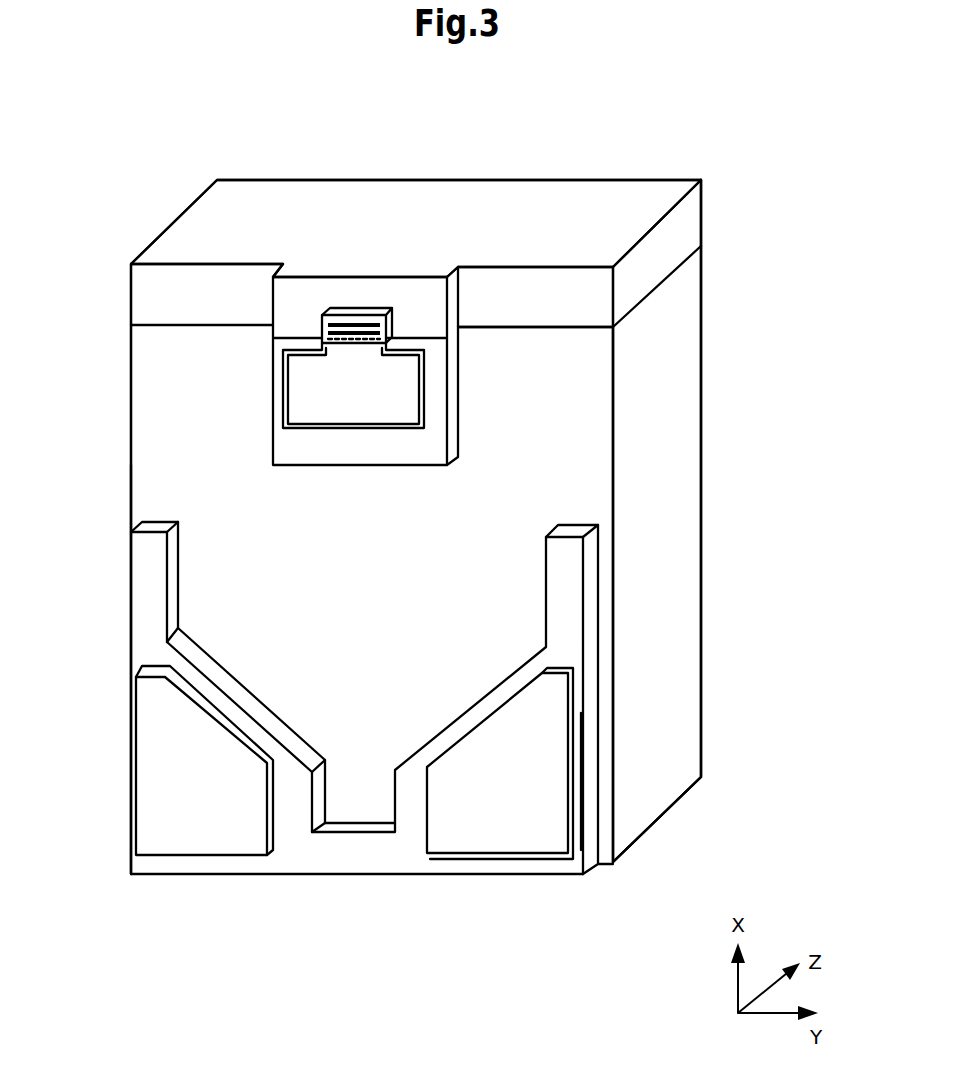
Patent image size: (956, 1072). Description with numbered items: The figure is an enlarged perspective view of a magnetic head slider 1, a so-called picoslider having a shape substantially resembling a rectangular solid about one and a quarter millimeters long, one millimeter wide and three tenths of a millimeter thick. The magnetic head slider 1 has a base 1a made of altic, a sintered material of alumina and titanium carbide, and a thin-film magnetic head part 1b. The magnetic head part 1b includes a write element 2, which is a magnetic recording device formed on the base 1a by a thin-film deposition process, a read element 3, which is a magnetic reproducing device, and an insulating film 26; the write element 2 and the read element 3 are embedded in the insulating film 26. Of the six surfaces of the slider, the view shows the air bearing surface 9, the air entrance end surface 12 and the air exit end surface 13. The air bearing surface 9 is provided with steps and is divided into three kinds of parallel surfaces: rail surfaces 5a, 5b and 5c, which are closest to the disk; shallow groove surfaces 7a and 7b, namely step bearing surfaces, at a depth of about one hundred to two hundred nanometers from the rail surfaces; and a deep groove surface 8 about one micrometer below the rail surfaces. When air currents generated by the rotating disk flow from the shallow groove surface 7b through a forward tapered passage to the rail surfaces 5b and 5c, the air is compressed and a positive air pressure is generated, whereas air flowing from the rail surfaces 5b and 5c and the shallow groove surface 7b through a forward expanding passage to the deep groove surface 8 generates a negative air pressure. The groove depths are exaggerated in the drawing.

The magnetic head slider 1 is at (783, 190).
The base 1a is at (685, 303).
The thin-film magnetic head part 1b is at (670, 252).
The write element 2 is at (350, 323).
The read element 3 is at (367, 320).
The rail surface 5a is at (303, 383).
The rail surface 5b is at (195, 830).
The rail surface 5c is at (487, 828).
The shallow groove surface 7a is at (290, 447).
The shallow groove surface 7b is at (375, 856).
The deep groove surface 8 is at (235, 497).
The air bearing surface 9 is at (542, 367).
The air entrance end surface 12 is at (285, 874).
The air exit end surface 13 is at (520, 228).
The insulating film 26 is at (692, 205).